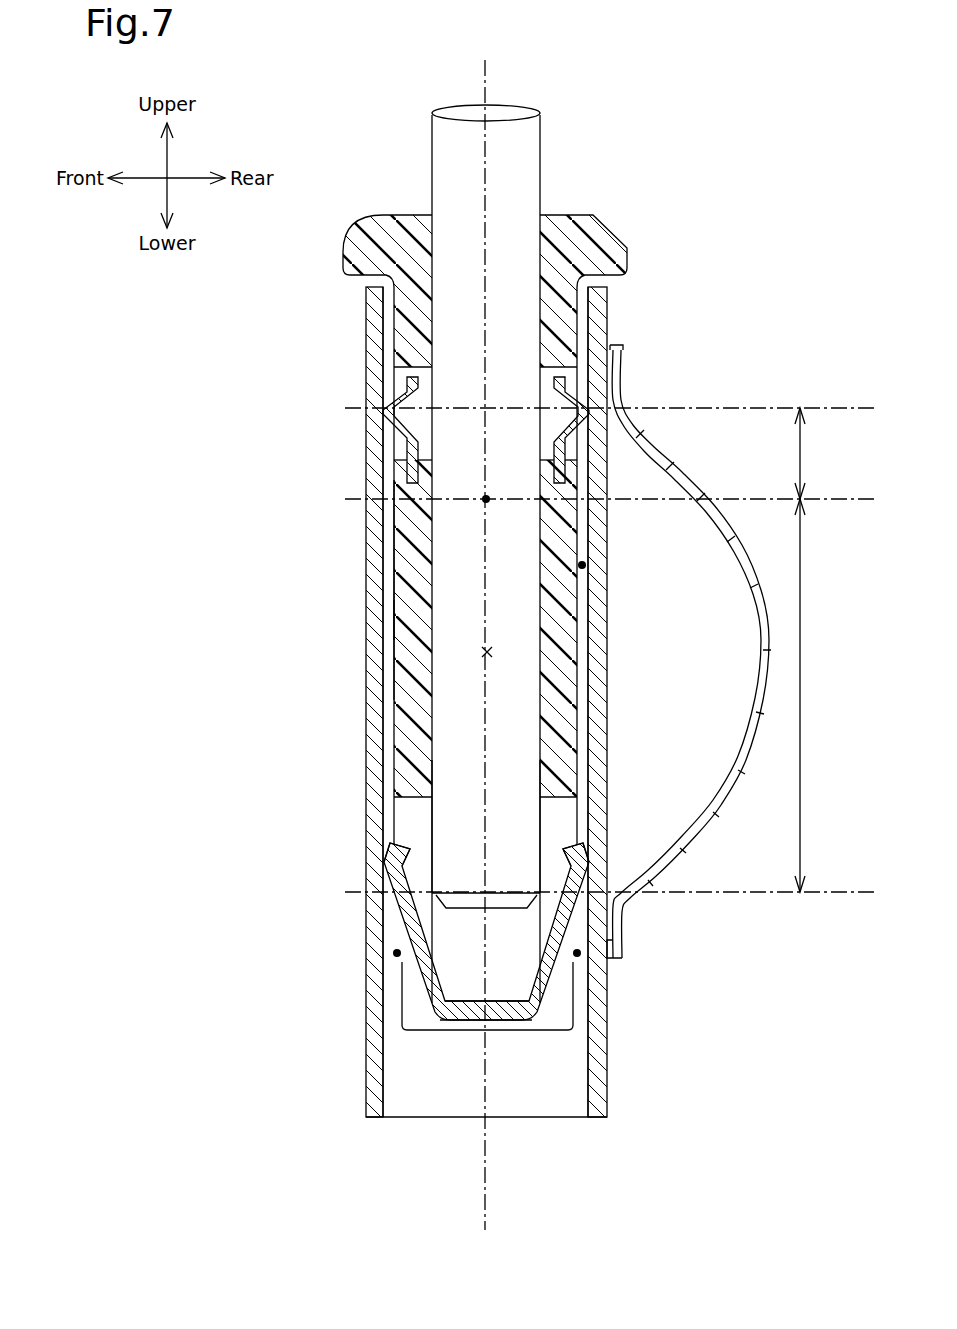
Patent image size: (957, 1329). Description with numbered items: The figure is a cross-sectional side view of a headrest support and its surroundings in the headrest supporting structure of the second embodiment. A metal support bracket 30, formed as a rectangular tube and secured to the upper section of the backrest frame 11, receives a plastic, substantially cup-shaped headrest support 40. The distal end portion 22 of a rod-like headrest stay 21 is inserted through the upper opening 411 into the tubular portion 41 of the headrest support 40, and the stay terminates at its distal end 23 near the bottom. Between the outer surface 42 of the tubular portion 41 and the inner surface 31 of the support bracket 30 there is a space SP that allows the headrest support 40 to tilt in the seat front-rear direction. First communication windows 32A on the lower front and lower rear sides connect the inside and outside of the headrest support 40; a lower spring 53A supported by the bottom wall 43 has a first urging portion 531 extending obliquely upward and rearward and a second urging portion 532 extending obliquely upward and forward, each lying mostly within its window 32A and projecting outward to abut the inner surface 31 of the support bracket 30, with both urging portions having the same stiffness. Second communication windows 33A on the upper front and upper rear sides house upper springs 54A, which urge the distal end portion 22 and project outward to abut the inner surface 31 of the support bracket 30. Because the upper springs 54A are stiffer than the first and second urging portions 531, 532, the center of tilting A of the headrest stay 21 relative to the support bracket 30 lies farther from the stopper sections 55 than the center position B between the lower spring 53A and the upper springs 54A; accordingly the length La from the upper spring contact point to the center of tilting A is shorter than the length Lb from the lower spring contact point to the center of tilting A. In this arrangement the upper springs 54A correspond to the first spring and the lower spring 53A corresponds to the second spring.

The backrest frame 11 is at (700, 490).
The headrest stay 21 is at (447, 718).
The distal end portion 22 is at (443, 779).
The distal end 23 is at (503, 910).
The support bracket 30 is at (378, 470).
The inner surface 31 is at (384, 546).
The first communication window 32A is at (422, 806).
The second communication window 33A is at (391, 380).
The headrest support 40 is at (400, 575).
The tubular portion 41 is at (402, 598).
The upper opening 411 is at (431, 210).
The outer surface 42 is at (402, 631).
The bottom wall 43 is at (460, 1032).
The lower spring 53A is at (555, 995).
The first urging portion 531 is at (582, 911).
The second urging portion 532 is at (390, 908).
The upper spring 54A is at (385, 399).
The stopper section 55 is at (397, 953).
The center of tilting A is at (488, 503).
The center position B is at (491, 653).
The space SP is at (582, 565).
The length La is at (817, 453).
The length Lb is at (817, 695).